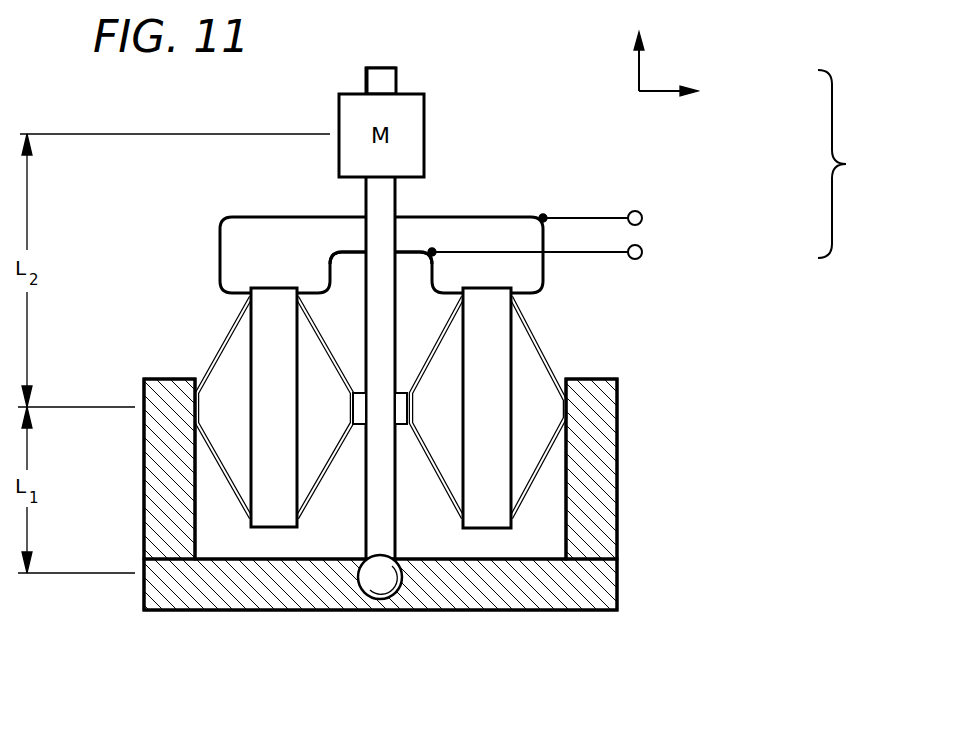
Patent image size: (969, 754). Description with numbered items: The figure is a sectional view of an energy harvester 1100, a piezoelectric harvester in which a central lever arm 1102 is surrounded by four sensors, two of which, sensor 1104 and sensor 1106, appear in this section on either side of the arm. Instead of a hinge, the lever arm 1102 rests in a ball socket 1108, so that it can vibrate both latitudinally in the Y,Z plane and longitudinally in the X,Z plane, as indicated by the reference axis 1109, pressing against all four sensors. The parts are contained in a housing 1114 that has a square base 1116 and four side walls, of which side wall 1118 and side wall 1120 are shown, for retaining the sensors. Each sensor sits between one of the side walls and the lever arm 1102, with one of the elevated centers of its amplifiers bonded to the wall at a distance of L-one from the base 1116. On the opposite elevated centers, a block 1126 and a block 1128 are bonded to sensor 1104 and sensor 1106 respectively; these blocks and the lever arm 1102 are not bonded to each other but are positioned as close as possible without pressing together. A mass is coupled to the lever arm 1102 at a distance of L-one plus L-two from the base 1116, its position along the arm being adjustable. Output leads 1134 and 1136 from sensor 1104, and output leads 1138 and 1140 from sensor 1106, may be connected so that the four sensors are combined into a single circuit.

The energy harvester 1100 is at (683, 333).
The lever arm 1102 is at (397, 73).
The sensor 1104 is at (481, 515).
The sensor 1106 is at (277, 515).
The ball socket 1108 is at (362, 597).
The reference axis 1109 is at (650, 95).
The housing 1114 is at (620, 565).
The square base 1116 is at (497, 600).
The side wall 1118 is at (609, 453).
The side wall 1120 is at (148, 392).
The block 1126 is at (400, 388).
The block 1128 is at (362, 428).
The output lead 1134 is at (545, 236).
The output lead 1136 is at (440, 283).
The output lead 1138 is at (258, 217).
The output lead 1140 is at (328, 272).